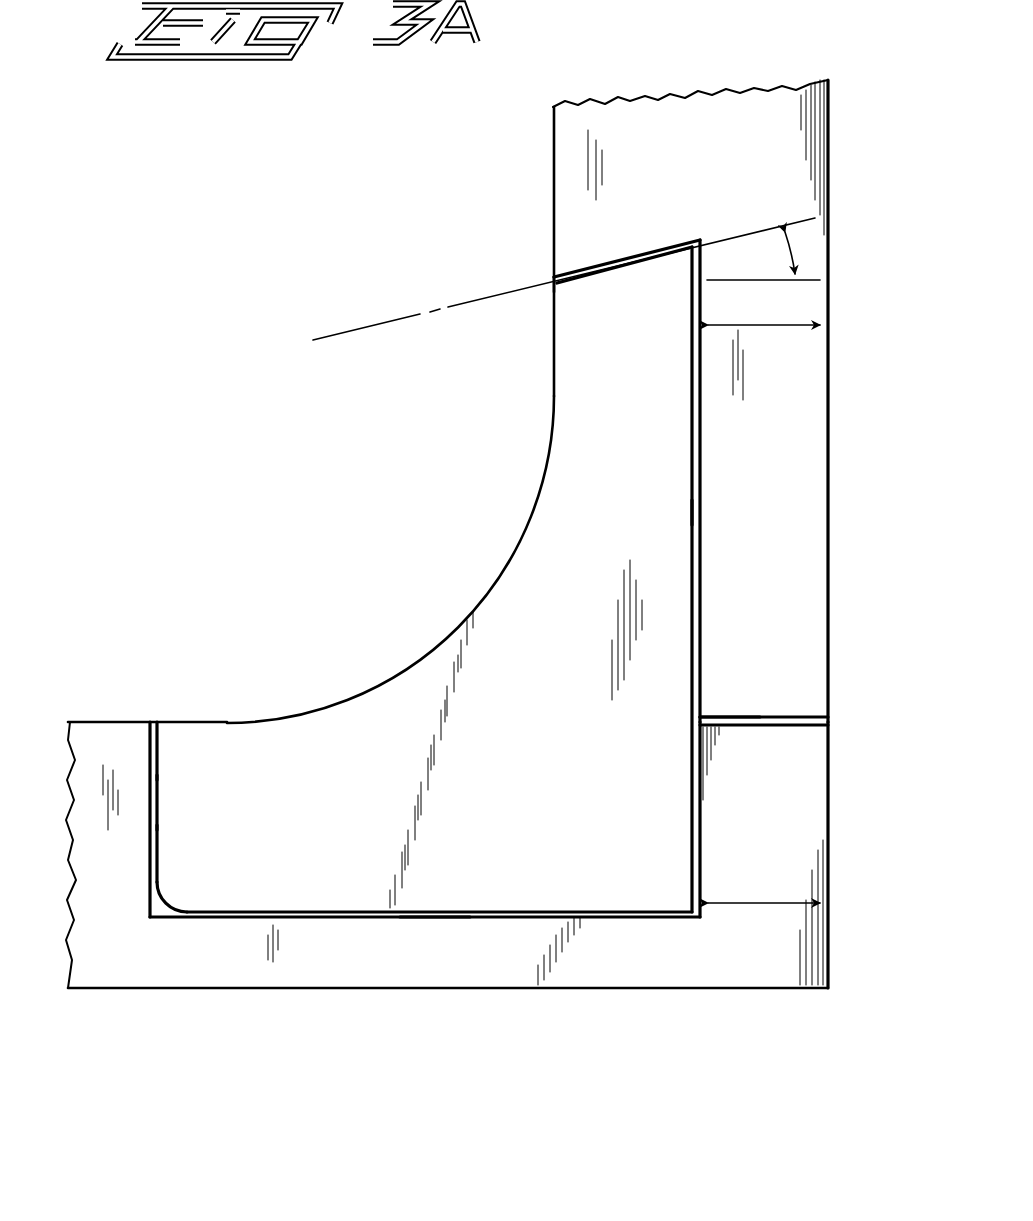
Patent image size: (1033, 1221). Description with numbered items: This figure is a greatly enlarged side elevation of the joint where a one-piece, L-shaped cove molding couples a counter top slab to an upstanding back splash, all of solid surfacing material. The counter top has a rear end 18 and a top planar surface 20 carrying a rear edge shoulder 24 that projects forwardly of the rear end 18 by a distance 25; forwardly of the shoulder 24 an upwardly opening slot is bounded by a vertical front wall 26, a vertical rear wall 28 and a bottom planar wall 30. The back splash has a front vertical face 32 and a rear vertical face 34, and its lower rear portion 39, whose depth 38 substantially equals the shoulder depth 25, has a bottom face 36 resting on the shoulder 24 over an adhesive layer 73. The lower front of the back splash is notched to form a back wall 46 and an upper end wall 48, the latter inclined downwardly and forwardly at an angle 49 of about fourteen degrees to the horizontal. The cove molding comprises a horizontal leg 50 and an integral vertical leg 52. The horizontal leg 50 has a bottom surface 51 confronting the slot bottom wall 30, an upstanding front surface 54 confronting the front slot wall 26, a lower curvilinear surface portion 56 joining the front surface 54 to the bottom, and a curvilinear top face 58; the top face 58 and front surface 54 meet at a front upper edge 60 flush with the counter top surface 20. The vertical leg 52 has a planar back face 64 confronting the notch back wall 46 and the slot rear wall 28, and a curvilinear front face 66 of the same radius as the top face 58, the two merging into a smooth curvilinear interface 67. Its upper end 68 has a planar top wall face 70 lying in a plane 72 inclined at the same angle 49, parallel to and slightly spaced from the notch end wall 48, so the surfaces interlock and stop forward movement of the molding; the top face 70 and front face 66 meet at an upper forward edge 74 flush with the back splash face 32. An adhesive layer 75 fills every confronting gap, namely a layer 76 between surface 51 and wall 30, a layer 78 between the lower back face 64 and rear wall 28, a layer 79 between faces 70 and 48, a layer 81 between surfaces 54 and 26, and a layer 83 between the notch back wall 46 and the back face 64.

The rear end 18 is at (828, 808).
The top planar surface 20 is at (120, 722).
The rear edge shoulder 24 is at (775, 783).
The distance 25 is at (757, 904).
The vertical front wall 26 is at (150, 800).
The vertical rear wall 28 is at (697, 846).
The bottom planar wall 30 is at (365, 913).
The front vertical face 32 is at (553, 163).
The rear vertical face 34 is at (830, 116).
The bottom end wall 36 is at (793, 716).
The depth 38 is at (778, 325).
The lower rear portion 39 is at (790, 618).
The back wall 46 is at (690, 513).
The upper end wall 48 is at (655, 256).
The angle 49 is at (797, 246).
The horizontal leg 50 is at (204, 1000).
The bottom surface 51 is at (435, 914).
The vertical leg 52 is at (716, 438).
The front surface 54 is at (160, 777).
The lower curvilinear surface portion 56 is at (172, 895).
The curvilinear top surface 58 is at (230, 722).
The front upper edge 60 is at (157, 722).
The back wall 64 is at (700, 540).
The front wall 66 is at (556, 389).
The curvilinear interface 67 is at (430, 518).
The upper elongate end 68 is at (705, 262).
The top wall face 70 is at (573, 273).
The plane 72 is at (365, 325).
The adhesive layer 73 is at (730, 713).
The upper forward edge 74 is at (557, 282).
The layer of adhesive 75 is at (236, 934).
The adhesive layer 76 is at (480, 912).
The adhesive layer 78 is at (697, 755).
The adhesive layer 79 is at (633, 262).
The adhesive layer 81 is at (157, 855).
The adhesive layer 83 is at (700, 512).